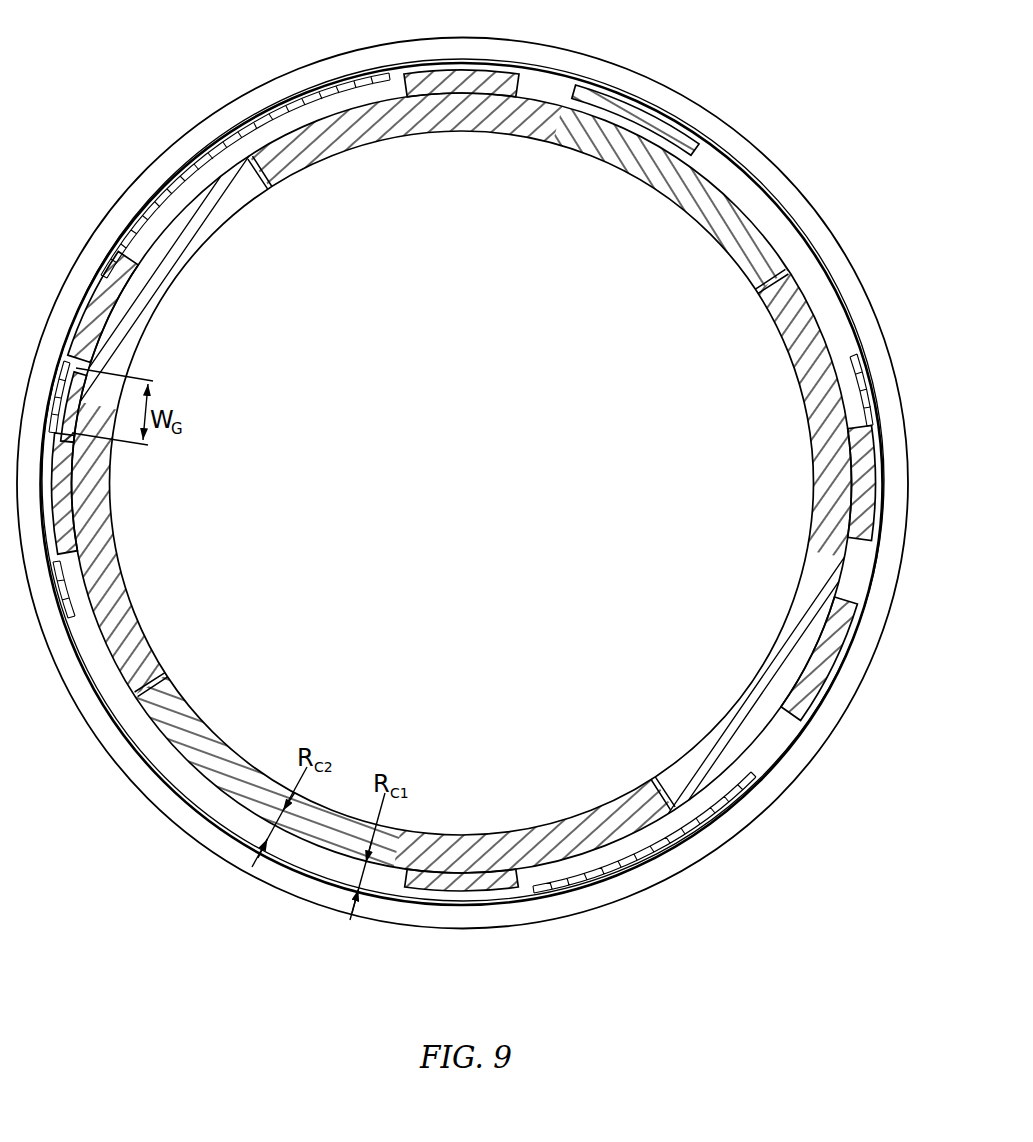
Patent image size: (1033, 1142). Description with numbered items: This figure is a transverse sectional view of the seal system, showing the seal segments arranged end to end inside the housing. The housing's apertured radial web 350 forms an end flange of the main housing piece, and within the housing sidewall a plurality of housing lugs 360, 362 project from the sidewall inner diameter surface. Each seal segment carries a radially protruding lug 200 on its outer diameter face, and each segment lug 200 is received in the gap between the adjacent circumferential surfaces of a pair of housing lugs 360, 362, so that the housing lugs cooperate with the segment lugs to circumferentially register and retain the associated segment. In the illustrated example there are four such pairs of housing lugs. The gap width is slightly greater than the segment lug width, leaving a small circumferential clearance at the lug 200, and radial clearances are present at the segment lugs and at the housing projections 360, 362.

The lug 200 is at (572, 93).
The apertured radial web 350 is at (600, 893).
The housing lug 360 is at (470, 80).
The housing lug 362 is at (636, 122).